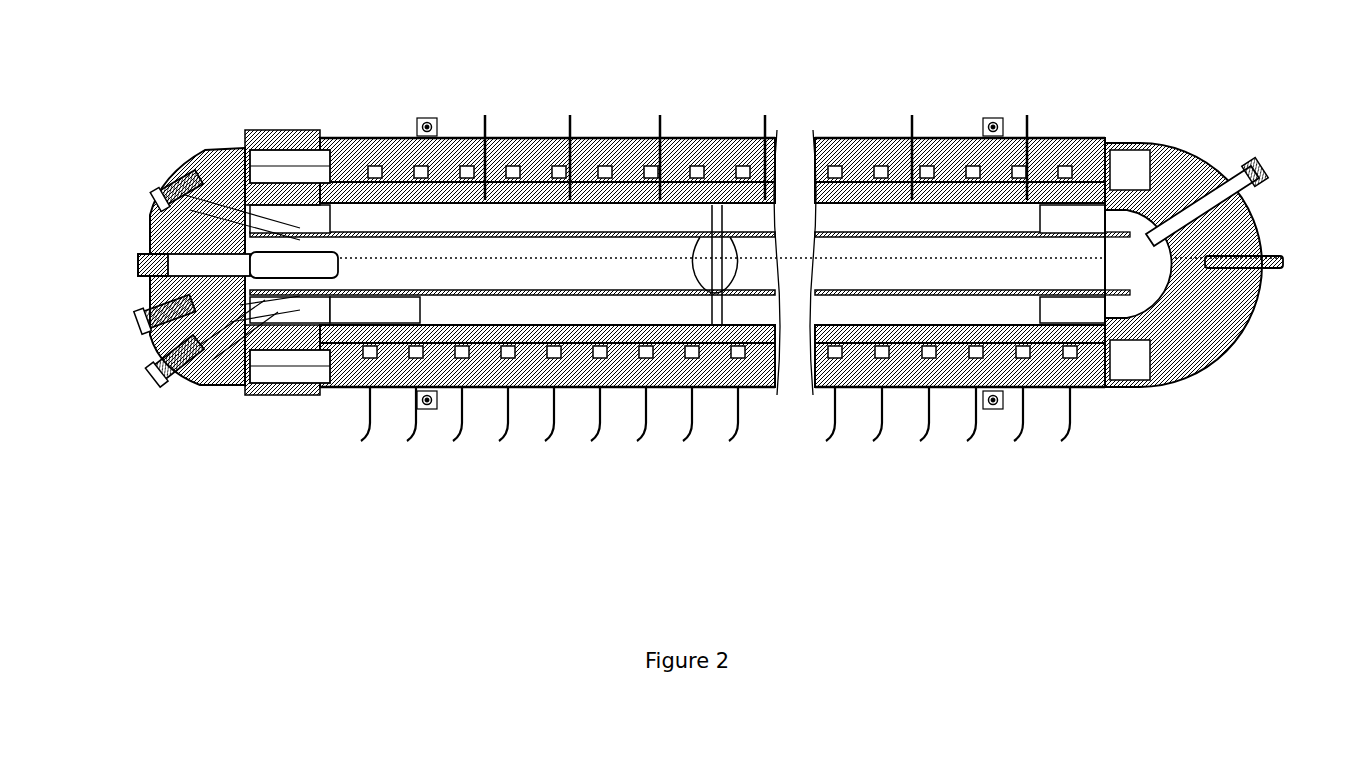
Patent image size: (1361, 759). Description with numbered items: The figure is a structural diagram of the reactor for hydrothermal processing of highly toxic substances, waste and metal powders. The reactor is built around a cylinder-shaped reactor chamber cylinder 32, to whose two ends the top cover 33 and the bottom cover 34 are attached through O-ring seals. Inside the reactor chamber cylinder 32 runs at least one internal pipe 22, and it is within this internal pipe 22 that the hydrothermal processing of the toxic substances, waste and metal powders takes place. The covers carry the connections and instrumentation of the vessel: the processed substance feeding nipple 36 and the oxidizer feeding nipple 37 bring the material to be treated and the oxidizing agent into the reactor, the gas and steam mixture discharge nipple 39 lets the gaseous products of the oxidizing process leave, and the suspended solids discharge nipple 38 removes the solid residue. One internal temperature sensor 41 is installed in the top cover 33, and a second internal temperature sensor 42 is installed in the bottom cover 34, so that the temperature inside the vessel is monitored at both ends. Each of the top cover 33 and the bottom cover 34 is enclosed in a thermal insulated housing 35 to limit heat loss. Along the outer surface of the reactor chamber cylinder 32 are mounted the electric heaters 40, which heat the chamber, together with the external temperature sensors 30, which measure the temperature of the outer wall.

The internal pipe 22 is at (850, 312).
The external temperature sensors 30 is at (658, 132).
The reactor chamber cylinder 32 is at (365, 340).
The top cover of the reactor chamber 33 is at (262, 392).
The bottom cover of the reactor chamber 34 is at (1215, 330).
The thermal insulated housings 35 is at (838, 135).
The processed substance feeding nipple 36 is at (140, 253).
The oxidizer feeding nipple 37 is at (147, 318).
The suspended solids discharge nipple 38 is at (1272, 248).
The gas and steam mixture discharge nipple 39 is at (176, 185).
The electric heaters 40 is at (600, 405).
The internal temperature sensor 41 is at (170, 383).
The internal temperature sensor 42 is at (1258, 168).